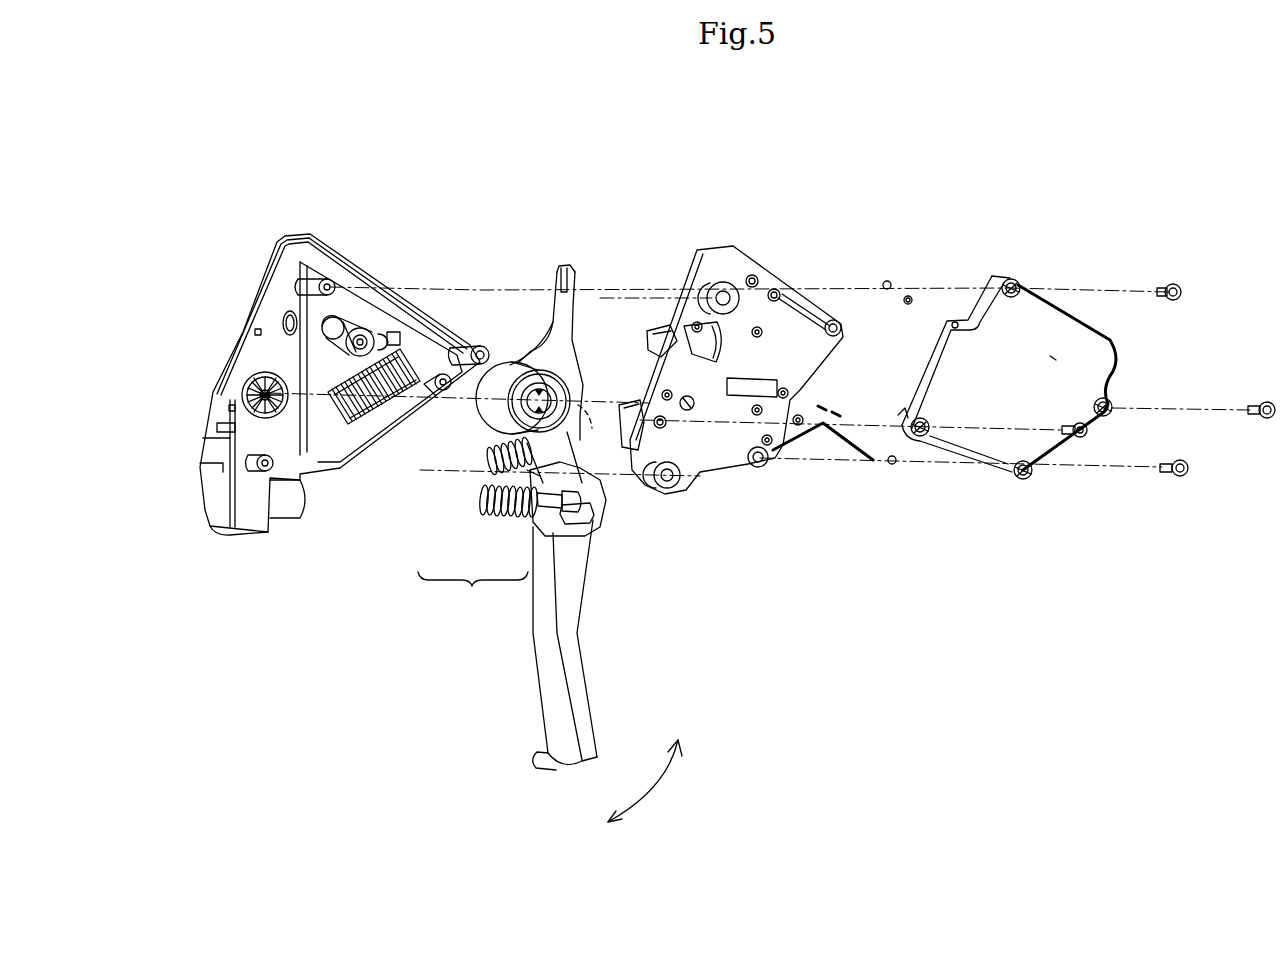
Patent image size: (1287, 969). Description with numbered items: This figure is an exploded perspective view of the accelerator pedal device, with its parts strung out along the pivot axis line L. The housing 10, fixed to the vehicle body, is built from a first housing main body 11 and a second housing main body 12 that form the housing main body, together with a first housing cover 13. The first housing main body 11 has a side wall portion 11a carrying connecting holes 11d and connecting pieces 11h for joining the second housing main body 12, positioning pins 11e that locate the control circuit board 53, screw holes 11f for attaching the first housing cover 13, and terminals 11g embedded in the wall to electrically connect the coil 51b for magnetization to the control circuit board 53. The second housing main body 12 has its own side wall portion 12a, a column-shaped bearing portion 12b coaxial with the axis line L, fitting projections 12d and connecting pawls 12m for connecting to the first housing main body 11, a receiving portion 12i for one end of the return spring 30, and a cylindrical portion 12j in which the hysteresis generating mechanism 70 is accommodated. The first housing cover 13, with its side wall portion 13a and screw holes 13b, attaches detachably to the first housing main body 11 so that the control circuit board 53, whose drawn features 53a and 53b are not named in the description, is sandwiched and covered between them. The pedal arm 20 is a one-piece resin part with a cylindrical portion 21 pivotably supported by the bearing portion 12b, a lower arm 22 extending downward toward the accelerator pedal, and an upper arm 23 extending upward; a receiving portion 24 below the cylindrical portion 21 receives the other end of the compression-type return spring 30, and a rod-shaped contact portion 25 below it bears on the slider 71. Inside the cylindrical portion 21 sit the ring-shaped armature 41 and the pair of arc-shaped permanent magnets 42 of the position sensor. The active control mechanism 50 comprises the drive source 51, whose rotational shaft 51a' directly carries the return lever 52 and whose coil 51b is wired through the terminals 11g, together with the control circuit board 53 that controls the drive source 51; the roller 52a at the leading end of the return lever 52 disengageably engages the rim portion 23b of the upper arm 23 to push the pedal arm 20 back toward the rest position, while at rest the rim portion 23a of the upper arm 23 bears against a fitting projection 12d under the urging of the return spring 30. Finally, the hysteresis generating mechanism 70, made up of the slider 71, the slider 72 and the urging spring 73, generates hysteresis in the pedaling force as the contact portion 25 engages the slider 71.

The housing 10 is at (268, 246).
The first housing main body 11 is at (736, 311).
The side wall portion 11a is at (730, 384).
The connecting holes 11d is at (735, 292).
The positioning pins 11e is at (697, 322).
The screw holes 11f is at (758, 288).
The terminals 11g is at (802, 427).
The connecting pieces 11h is at (658, 327).
The second housing main body 12 is at (340, 346).
The side wall portion 12a is at (436, 322).
The bearing portion 12b is at (250, 370).
The fitting projections 12d is at (295, 238).
The receiving portion 12i is at (217, 428).
The cylindrical portion 12j is at (212, 523).
The connecting pawls 12m is at (257, 330).
The first housing cover 13 is at (1067, 315).
The side wall portion 13a is at (1053, 358).
The screw holes 13b is at (1018, 288).
The pedal arm 20 is at (534, 688).
The cylindrical portion 21 is at (487, 407).
The lower arm 22 is at (543, 600).
The upper arm 23 is at (574, 290).
The rim portion 23a is at (562, 268).
The rim portion 23b is at (585, 340).
The receiving portion 24 is at (480, 498).
The contact portion 25 is at (567, 522).
The return spring 30 is at (486, 458).
The armature 41 is at (556, 380).
The permanent magnets 42 is at (545, 401).
The axis line L is at (588, 429).
The active control mechanism 50 is at (646, 319).
The drive source 51 is at (374, 386).
The rotational shaft 51a' is at (420, 266).
The coil for magnetization 51b is at (346, 450).
The return lever 52 is at (365, 330).
The roller 52a is at (334, 320).
The control circuit board 53 is at (937, 330).
The bracket hole 53a is at (835, 322).
The bracket hole 53b is at (888, 282).
The hysteresis generating mechanism 70 is at (473, 592).
The slider 71 is at (510, 533).
The slider 72 is at (535, 518).
The urging spring 73 is at (466, 508).